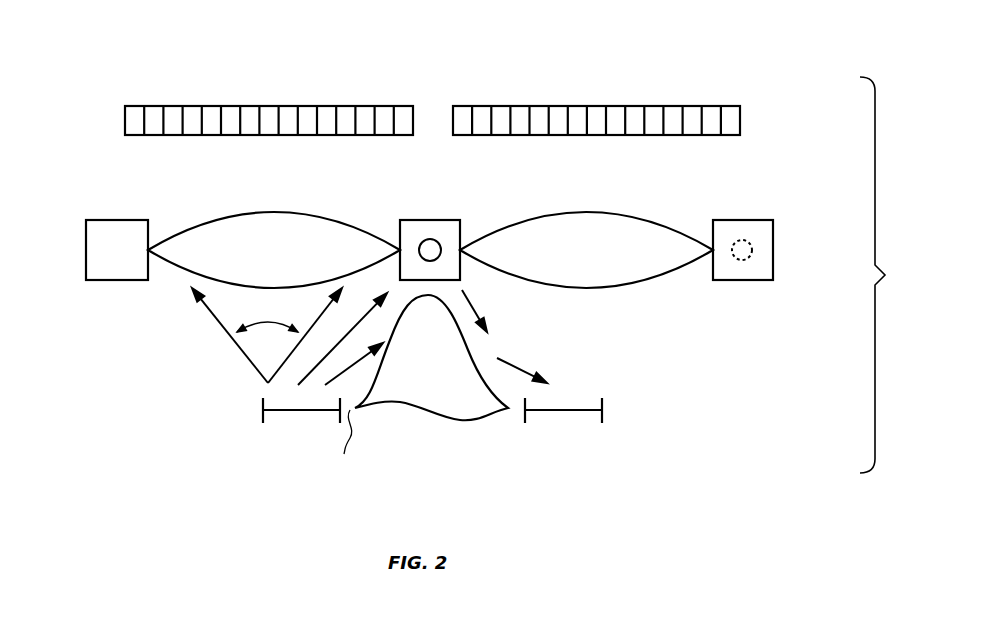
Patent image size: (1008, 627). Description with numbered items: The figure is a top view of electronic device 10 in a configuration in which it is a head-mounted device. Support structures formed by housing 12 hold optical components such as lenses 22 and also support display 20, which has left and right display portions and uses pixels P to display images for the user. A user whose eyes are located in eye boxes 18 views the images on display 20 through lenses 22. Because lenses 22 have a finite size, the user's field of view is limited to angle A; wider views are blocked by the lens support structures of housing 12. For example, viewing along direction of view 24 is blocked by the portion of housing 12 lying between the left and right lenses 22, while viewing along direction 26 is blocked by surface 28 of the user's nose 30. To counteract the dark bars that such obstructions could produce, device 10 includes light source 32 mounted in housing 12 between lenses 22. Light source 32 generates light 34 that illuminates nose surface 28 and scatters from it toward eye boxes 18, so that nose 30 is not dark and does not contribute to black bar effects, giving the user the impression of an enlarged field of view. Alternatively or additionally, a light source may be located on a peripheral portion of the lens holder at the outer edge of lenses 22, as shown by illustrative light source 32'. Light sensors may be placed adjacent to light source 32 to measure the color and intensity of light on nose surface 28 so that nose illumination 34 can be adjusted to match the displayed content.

The electronic device 10 is at (885, 275).
The housing 12 is at (86, 248).
The eye boxes 18 is at (263, 412).
The display 20 is at (125, 122).
The pixels P is at (173, 118).
The lenses 22 is at (182, 240).
The direction of view 24 is at (295, 360).
The direction 26 is at (347, 368).
The nose surface 28 is at (345, 445).
The nose 30 is at (437, 402).
The light source 32 is at (419, 217).
The light source 32' is at (786, 251).
The light 34 is at (474, 307).
The angle A is at (267, 317).